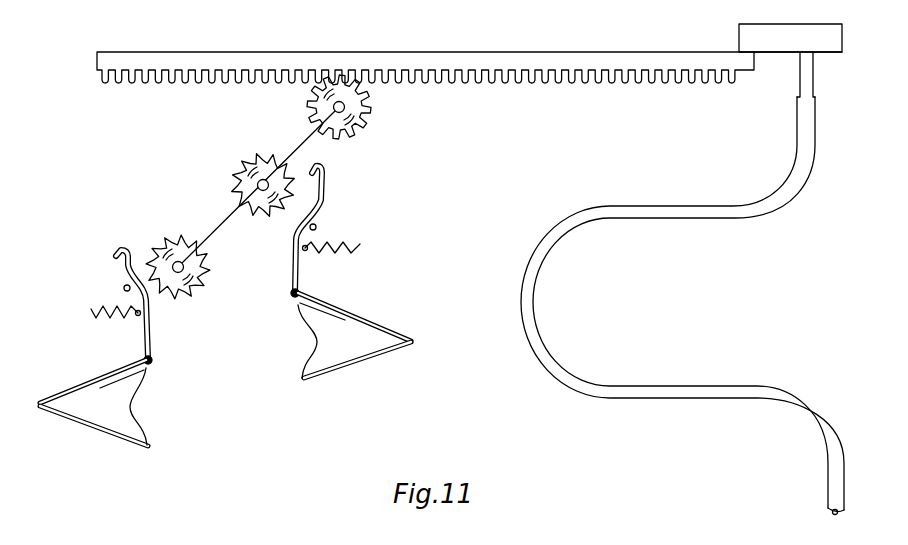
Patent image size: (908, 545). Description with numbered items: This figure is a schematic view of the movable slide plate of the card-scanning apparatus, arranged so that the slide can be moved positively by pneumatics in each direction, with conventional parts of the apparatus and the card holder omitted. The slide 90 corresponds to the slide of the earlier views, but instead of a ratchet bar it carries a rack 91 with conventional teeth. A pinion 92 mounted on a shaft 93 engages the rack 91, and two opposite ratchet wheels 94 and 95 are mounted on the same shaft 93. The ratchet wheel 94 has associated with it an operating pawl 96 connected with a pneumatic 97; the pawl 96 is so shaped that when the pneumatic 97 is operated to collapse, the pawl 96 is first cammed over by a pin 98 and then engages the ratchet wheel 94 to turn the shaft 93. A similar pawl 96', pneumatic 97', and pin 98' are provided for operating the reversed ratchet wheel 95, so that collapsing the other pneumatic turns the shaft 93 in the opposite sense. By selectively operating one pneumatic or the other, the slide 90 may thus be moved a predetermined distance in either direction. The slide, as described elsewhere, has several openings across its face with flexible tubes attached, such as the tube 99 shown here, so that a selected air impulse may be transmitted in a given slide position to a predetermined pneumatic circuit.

The slide 90 is at (836, 40).
The rack 91 is at (590, 62).
The pinion 92 is at (372, 108).
The shaft 93 is at (303, 142).
The ratchet wheel 94 is at (300, 163).
The ratchet wheel 95 is at (212, 262).
The operating pawl 96 is at (328, 231).
The pneumatic 97 is at (362, 332).
The pin 98 is at (346, 212).
The pawl 96' is at (155, 307).
The pneumatic 97' is at (119, 403).
The pin 98' is at (98, 283).
The flexible tube 99 is at (533, 300).